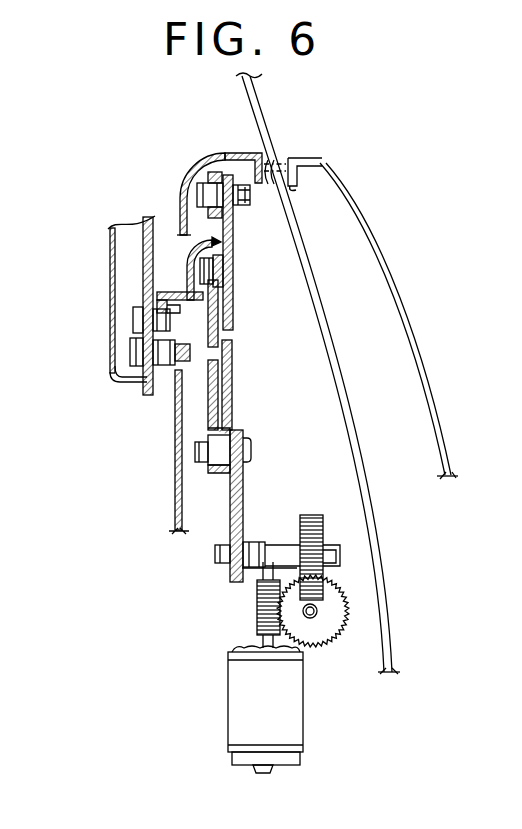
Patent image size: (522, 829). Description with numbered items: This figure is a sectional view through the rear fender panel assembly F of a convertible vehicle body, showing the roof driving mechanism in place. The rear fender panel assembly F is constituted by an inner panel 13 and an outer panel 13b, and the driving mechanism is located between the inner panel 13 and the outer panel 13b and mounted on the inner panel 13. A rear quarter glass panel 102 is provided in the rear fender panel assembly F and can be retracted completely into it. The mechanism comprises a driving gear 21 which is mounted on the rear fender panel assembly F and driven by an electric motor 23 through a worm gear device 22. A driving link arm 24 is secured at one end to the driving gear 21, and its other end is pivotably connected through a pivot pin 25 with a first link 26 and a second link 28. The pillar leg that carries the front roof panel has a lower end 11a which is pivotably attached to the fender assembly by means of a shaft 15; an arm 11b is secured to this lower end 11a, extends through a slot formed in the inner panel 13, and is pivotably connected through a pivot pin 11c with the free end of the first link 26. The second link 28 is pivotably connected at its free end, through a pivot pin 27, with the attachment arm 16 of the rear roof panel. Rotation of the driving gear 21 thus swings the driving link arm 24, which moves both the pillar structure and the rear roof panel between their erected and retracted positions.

The rear quarter glass panel 102 is at (330, 322).
The rear fender panel assembly F is at (374, 238).
The outer panel 13b is at (346, 194).
The attachment arm 16 is at (218, 156).
The arm 11b is at (165, 290).
The lower end 11a is at (143, 250).
The shaft 15 is at (172, 366).
The pivot pin 11c is at (233, 274).
The second link 28 is at (233, 255).
The pivot pin 27 is at (238, 207).
The first link 26 is at (205, 378).
The pivot pin 25 is at (250, 448).
The driving link arm 24 is at (244, 512).
The driving gear 21 is at (315, 516).
The worm gear device 22 is at (333, 648).
The electric motor 23 is at (232, 706).
The inner panel 13 is at (178, 480).